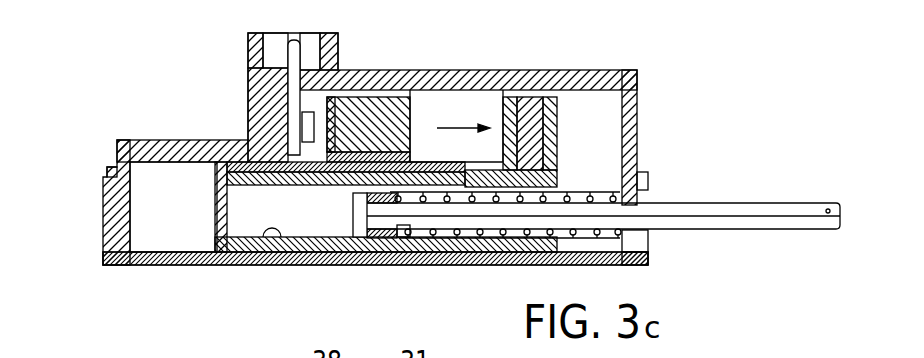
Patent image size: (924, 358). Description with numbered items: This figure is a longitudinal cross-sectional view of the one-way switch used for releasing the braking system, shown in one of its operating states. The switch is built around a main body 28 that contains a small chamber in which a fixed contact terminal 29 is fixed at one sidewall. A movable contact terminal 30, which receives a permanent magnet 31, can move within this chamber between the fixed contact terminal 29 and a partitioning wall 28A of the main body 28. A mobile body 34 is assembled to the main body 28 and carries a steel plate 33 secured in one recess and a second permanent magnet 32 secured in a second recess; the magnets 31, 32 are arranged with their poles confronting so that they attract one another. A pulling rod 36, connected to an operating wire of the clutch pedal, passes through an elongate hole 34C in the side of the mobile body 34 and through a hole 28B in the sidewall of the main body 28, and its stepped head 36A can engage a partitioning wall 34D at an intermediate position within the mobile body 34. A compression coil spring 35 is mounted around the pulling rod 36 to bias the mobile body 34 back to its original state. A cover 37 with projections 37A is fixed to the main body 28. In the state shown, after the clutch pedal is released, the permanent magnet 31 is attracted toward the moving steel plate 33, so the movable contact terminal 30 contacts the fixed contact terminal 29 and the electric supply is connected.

The main body 28 is at (143, 145).
The partitioning wall 28A is at (413, 103).
The hole 28B is at (640, 245).
The fixed contact terminal 29 is at (300, 50).
The movable contact terminal 30 is at (328, 97).
The permanent magnet 31 is at (405, 64).
The second permanent magnet 32 is at (530, 97).
The steel plate 33 is at (455, 165).
The mobile body 34 is at (556, 132).
The elongate hole 34C is at (265, 253).
The partitioning wall 34D is at (380, 238).
The compression coil spring 35 is at (600, 238).
The pulling rod 36 is at (710, 213).
The stepped head 36A is at (343, 253).
The cover 37 is at (148, 266).
The projection 37A is at (107, 172).